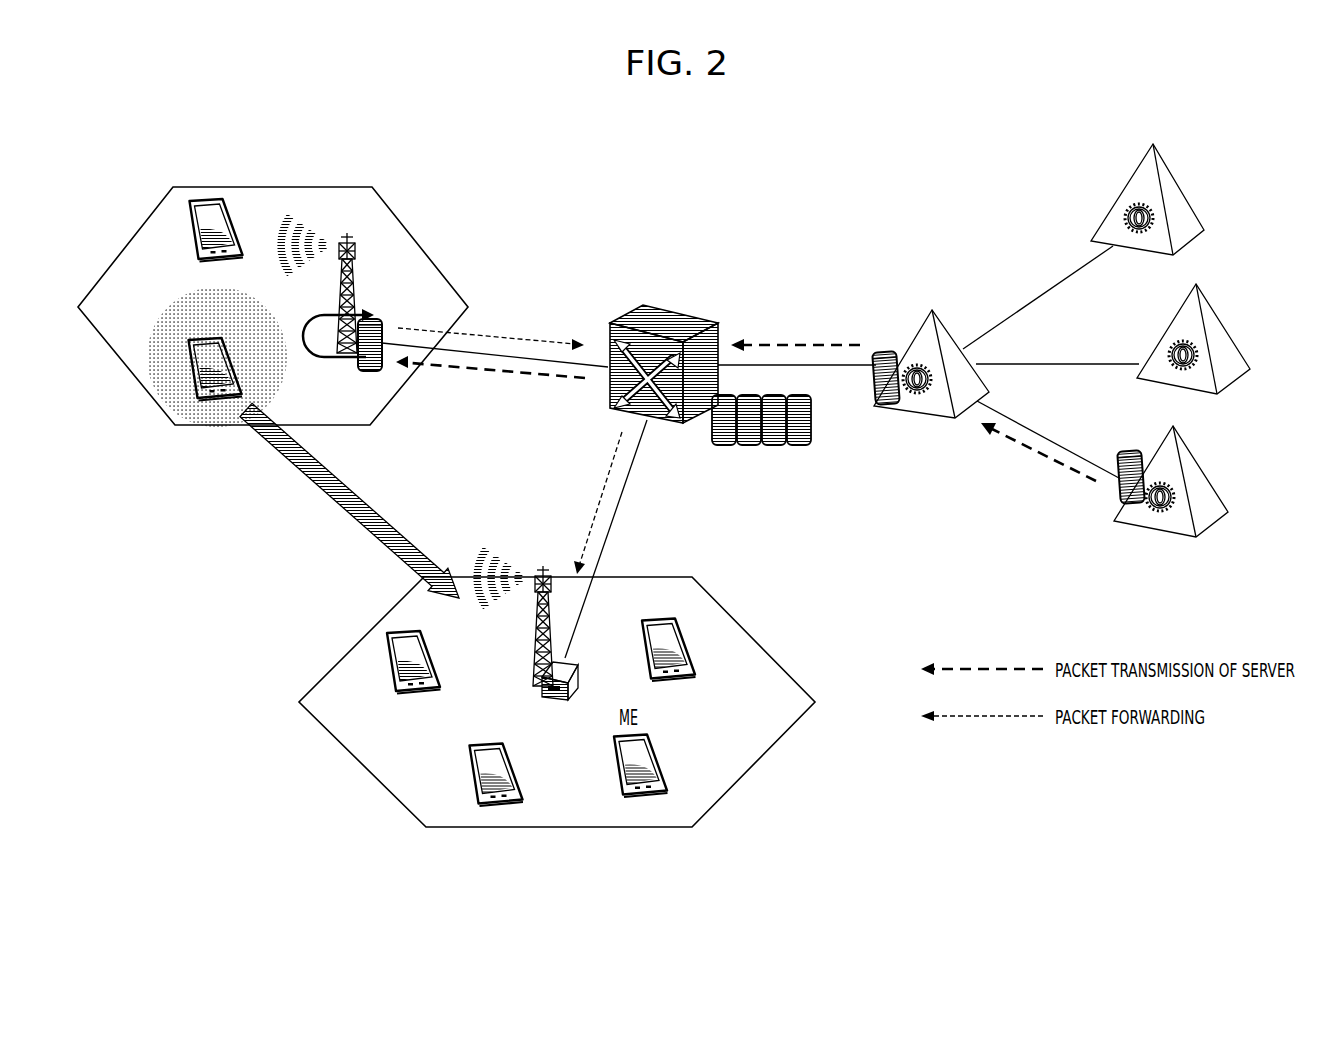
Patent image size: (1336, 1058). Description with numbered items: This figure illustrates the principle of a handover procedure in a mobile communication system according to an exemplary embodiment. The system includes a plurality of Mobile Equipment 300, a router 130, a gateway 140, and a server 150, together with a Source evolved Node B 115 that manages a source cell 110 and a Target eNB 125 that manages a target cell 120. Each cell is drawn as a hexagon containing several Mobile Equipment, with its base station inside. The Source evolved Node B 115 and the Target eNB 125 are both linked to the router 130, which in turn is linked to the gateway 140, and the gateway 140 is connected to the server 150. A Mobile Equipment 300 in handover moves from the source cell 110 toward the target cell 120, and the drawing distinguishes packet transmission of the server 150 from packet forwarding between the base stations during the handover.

The source cell 110 is at (428, 157).
The Source evolved Node B 115 is at (334, 203).
The target cell 120 is at (573, 858).
The Target eNB 125 is at (538, 530).
The router 130 is at (660, 273).
The gateway 140 is at (931, 277).
The server 150 is at (1176, 571).
The Mobile Equipment 300 is at (187, 377).